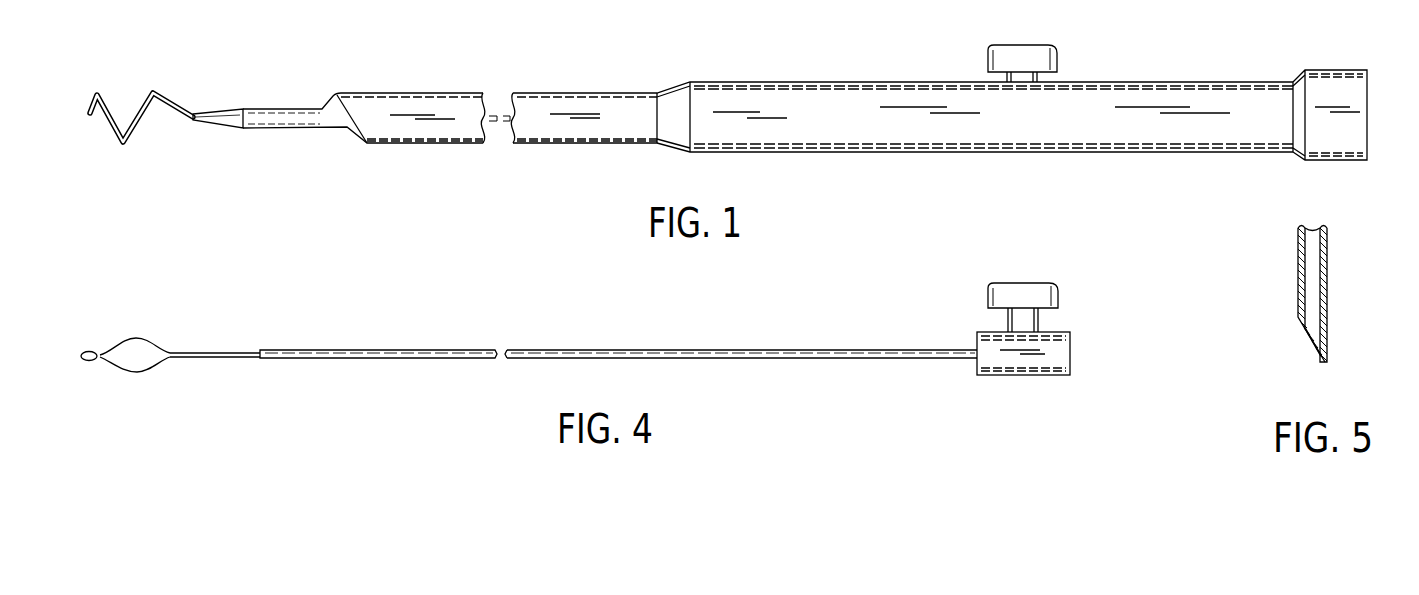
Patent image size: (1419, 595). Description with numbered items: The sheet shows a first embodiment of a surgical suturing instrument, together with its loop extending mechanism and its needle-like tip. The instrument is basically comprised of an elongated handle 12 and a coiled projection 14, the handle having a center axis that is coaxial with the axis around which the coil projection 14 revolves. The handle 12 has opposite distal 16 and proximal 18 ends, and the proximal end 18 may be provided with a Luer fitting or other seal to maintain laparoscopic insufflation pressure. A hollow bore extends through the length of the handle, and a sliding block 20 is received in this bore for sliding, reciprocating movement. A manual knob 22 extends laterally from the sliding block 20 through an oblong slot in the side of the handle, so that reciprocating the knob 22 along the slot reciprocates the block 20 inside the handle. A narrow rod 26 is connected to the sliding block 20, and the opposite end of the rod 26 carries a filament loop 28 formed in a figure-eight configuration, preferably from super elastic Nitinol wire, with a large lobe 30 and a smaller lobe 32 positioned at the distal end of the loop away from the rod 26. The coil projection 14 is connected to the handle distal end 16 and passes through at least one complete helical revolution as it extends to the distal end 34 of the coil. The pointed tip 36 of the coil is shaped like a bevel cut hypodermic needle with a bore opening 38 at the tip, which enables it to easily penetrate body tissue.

In FIG. 1, the handle 12 is at (808, 102).
In FIG. 1, the coiled projection 14 is at (153, 92).
In FIG. 1, the distal end 16 is at (343, 108).
In FIG. 1, the proximal end 18 is at (1328, 90).
In FIG. 4, the sliding block 20 is at (1057, 355).
In FIG. 1, the manual knob 22 is at (1018, 53).
In FIG. 4, the manual knob 22 is at (1022, 290).
In FIG. 4, the narrow rod 26 is at (638, 350).
In FIG. 4, the filament loop 28 is at (170, 348).
In FIG. 4, the large lobe 30 is at (139, 352).
In FIG. 4, the smaller lobe 32 is at (88, 353).
In FIG. 5, the distal end 34 is at (1298, 298).
In FIG. 5, the pointed tip 36 is at (1320, 358).
In FIG. 5, the bore opening 38 is at (1312, 333).